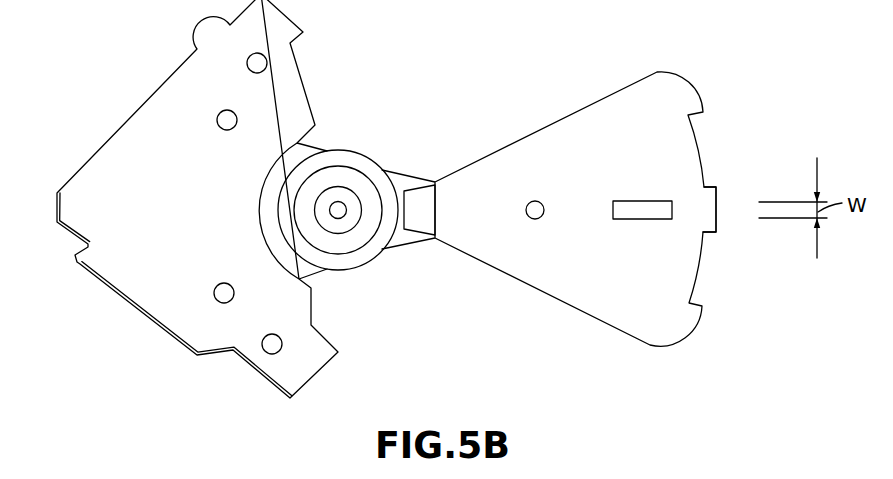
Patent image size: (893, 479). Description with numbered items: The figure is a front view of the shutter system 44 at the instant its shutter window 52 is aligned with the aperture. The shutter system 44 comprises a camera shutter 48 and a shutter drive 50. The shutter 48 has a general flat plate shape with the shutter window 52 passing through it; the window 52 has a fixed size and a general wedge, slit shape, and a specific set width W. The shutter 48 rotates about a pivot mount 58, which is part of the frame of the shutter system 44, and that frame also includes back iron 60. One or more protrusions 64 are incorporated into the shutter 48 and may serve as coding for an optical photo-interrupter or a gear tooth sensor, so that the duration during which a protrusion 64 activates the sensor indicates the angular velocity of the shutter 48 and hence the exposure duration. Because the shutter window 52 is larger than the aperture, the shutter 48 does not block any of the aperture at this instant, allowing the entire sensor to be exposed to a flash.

The shutter system 44 is at (98, 62).
The camera shutter 48 is at (568, 263).
The shutter drive 50 is at (98, 200).
The shutter window 52 is at (650, 196).
The pivot mount 58 is at (350, 199).
The back iron 60 is at (115, 250).
The protrusion 64 is at (721, 195).